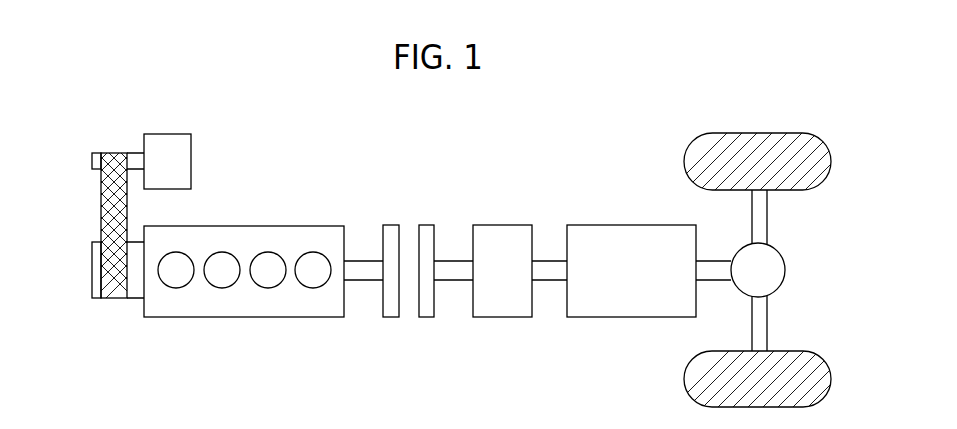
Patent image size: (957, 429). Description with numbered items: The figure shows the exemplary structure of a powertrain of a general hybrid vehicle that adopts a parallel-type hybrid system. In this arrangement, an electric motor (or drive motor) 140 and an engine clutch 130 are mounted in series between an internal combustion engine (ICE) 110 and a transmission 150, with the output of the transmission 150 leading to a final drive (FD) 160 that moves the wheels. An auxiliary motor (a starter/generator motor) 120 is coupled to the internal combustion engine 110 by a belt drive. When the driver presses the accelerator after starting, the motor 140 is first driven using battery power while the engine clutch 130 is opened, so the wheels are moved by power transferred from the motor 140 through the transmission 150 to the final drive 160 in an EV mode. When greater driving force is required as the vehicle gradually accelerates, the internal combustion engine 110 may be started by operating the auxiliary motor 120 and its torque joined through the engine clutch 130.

The internal combustion engine 110 is at (310, 224).
The auxiliary motor 120 is at (157, 133).
The engine clutch 130 is at (427, 223).
The electric motor 140 is at (497, 224).
The transmission 150 is at (662, 224).
The final drive 160 is at (787, 253).